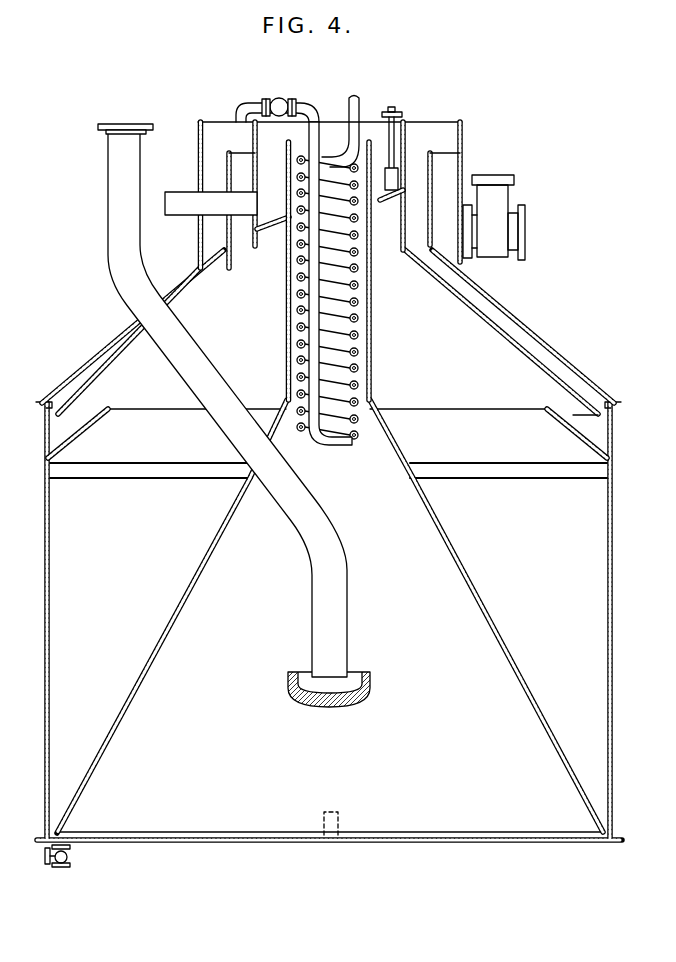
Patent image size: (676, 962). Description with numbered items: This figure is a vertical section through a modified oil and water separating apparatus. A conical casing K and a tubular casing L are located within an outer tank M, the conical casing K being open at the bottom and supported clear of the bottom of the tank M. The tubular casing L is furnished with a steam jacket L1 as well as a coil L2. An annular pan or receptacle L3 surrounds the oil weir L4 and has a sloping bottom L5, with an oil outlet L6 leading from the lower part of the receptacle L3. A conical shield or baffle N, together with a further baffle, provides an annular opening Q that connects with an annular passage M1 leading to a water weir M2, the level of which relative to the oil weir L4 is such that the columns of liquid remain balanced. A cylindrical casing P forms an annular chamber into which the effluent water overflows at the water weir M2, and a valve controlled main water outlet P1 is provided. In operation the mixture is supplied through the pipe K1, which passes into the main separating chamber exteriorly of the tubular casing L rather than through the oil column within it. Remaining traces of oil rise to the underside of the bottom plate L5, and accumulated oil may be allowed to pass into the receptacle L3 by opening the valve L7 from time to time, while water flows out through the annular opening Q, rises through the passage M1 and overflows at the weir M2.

The conical casing K is at (470, 576).
The pipe K1 is at (118, 224).
The tubular casing L is at (372, 346).
The steam jacket L1 is at (284, 322).
The coil L2 is at (358, 300).
The annular pan or receptacle L3 is at (405, 140).
The oil weir L4 is at (366, 142).
The sloping bottom L5 is at (274, 219).
The oil outlet L6 is at (192, 208).
The valve L7 is at (392, 198).
The outer tank M is at (607, 605).
The annular passage M1 is at (500, 313).
The water weir M2 is at (432, 154).
The conical shield or baffle N is at (585, 442).
The cylindrical casing P is at (200, 137).
The main water outlet P1 is at (497, 203).
The annular opening Q is at (577, 413).